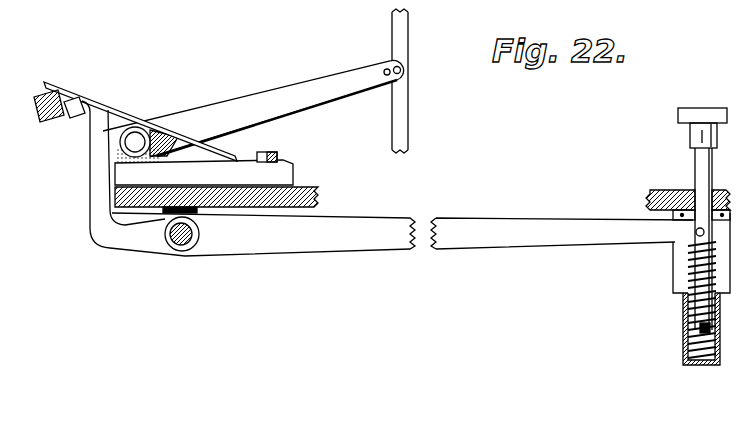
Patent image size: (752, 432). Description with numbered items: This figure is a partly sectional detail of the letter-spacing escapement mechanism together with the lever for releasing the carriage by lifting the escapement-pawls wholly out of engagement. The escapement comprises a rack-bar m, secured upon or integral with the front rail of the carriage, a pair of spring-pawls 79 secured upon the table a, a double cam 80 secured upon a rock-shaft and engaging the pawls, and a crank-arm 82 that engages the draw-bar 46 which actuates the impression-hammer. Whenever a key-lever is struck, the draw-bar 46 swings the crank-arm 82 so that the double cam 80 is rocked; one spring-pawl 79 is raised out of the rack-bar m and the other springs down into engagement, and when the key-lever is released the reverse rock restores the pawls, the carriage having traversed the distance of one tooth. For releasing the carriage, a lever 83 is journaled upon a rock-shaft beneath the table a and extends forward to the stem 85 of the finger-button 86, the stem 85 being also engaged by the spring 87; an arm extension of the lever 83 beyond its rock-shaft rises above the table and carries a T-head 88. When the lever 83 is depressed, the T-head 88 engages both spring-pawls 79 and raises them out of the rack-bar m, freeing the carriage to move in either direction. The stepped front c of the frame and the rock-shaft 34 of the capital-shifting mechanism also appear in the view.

The draw-bar 46 is at (415, 81).
The spring-pawls 79 is at (140, 165).
The double cam 80 is at (185, 129).
The crank-arm 82 is at (253, 111).
The lever 83 is at (401, 234).
The rock-shaft 34 is at (180, 246).
The stem 85 is at (689, 240).
The finger-button 86 is at (686, 128).
The spring 87 is at (684, 318).
The T-head 88 is at (73, 120).
The rack-bar m is at (44, 110).
The table a is at (225, 182).
The front c is at (684, 195).